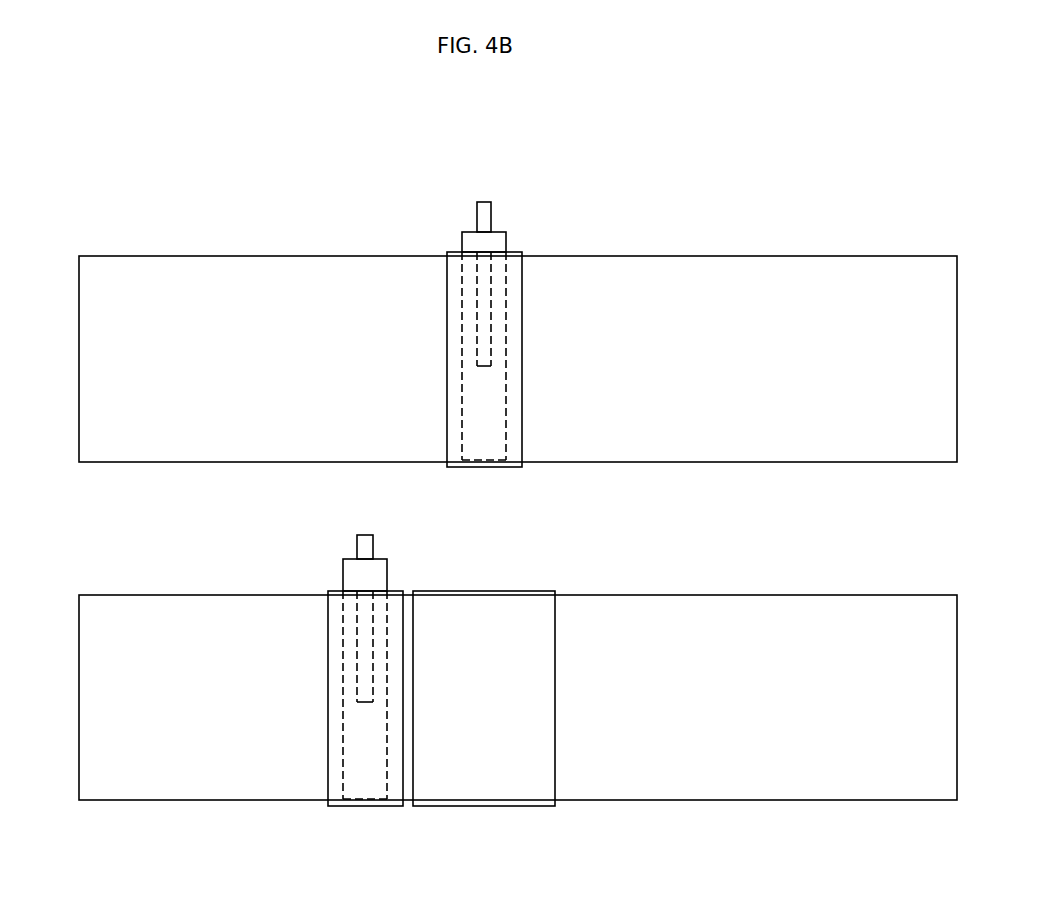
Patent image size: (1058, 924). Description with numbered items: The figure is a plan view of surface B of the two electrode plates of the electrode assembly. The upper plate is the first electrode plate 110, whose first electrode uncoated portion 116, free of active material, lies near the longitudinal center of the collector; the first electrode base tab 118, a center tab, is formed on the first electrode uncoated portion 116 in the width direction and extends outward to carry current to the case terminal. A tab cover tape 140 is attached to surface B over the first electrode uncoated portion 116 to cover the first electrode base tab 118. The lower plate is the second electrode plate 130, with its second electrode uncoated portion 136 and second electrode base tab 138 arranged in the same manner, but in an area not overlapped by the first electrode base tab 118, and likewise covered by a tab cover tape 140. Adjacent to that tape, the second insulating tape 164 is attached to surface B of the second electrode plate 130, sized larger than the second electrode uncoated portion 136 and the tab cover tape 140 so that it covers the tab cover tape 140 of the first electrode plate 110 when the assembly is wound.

The first electrode plate 110 is at (104, 241).
The first electrode uncoated portion 116 is at (495, 441).
The first electrode base tab 118 is at (483, 200).
The tab cover tape 140 is at (513, 362).
The second electrode plate 130 is at (98, 822).
The second electrode uncoated portion 136 is at (366, 760).
The second electrode base tab 138 is at (357, 545).
The second insulating tape 164 is at (485, 610).